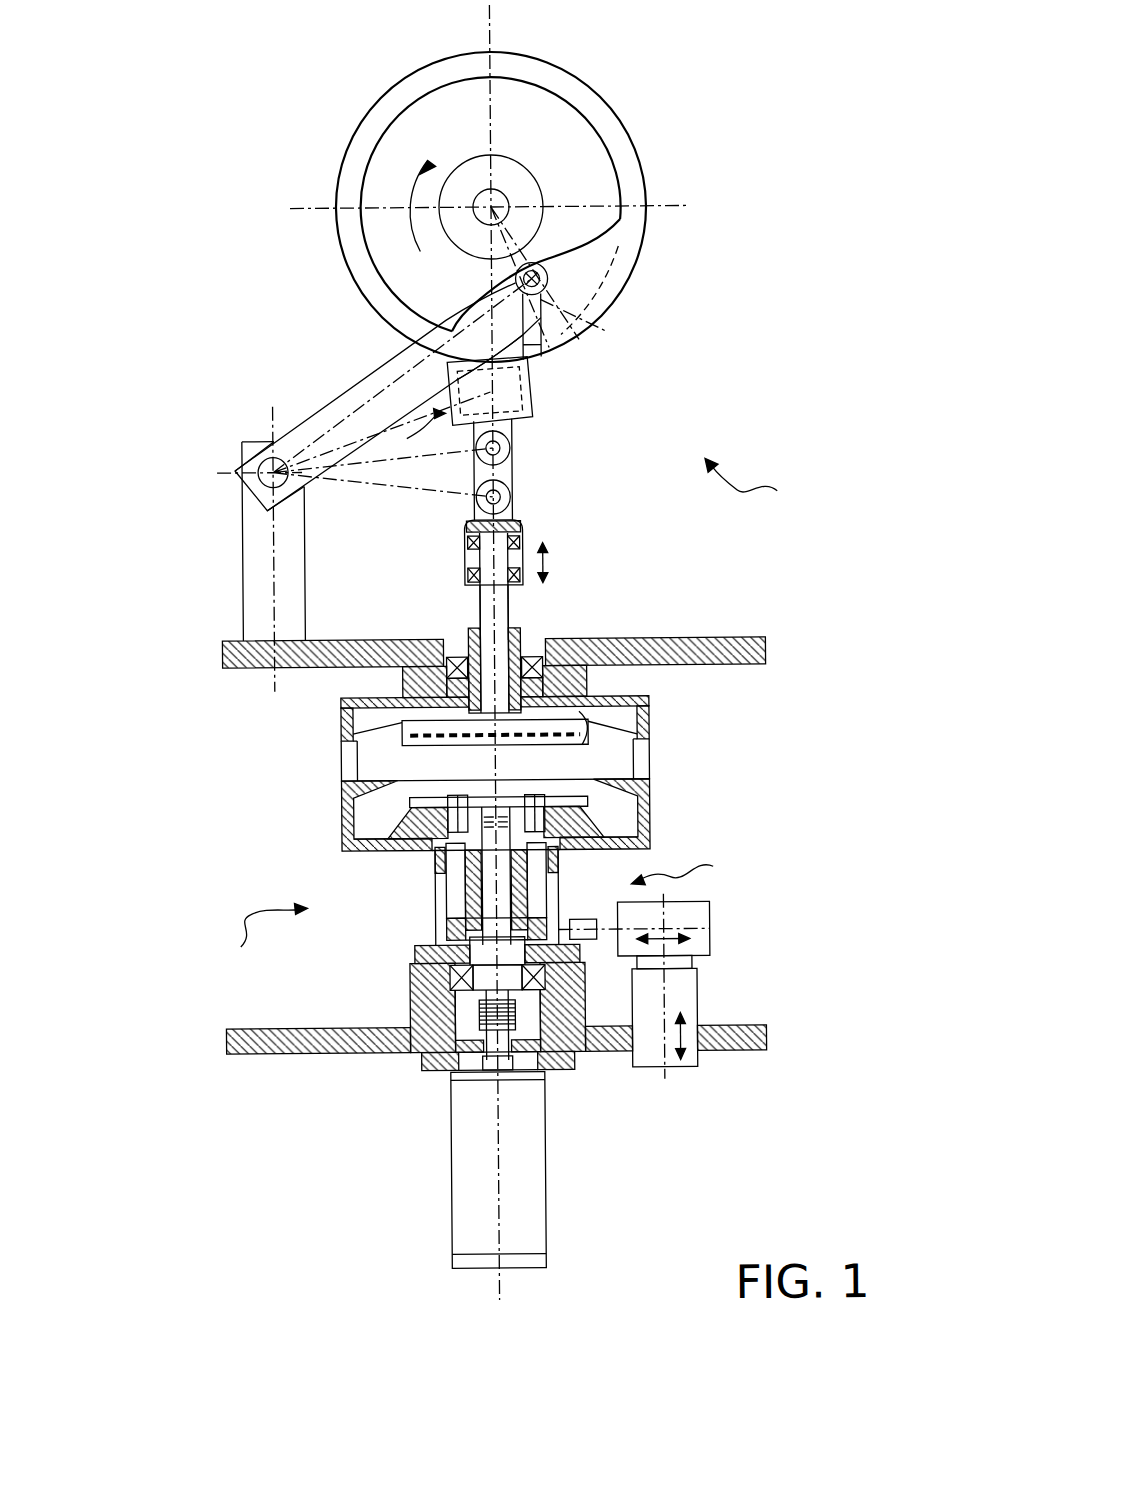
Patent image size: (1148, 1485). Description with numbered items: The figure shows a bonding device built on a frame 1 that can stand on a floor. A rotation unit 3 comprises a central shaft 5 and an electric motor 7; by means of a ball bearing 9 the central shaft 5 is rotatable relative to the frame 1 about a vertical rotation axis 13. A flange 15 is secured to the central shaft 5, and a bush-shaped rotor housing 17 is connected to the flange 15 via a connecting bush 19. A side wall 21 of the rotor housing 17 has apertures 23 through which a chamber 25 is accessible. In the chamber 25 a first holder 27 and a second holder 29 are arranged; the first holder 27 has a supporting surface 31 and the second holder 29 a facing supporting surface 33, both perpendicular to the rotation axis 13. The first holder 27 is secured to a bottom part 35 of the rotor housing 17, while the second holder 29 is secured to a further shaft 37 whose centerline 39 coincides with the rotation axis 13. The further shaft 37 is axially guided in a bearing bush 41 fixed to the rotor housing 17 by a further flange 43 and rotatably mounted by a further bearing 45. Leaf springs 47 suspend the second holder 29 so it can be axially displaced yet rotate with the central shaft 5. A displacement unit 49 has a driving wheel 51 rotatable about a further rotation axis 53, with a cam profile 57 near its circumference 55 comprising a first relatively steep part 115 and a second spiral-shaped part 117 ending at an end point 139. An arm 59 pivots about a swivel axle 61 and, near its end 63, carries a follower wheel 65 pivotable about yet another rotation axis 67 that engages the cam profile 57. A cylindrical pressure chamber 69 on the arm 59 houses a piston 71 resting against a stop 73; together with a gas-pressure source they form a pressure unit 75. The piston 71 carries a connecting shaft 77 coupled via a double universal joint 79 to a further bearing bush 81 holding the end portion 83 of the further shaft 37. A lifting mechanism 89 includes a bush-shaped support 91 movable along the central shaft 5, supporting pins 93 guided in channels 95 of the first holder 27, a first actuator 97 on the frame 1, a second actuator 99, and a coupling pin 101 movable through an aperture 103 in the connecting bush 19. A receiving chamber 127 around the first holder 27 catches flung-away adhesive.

The frame 1 is at (245, 576).
The rotation unit 3 is at (206, 958).
The central shaft 5 is at (485, 895).
The electric motor 7 is at (465, 1197).
The ball bearing 9 is at (420, 985).
The rotation axis 13 is at (490, 613).
The flange 15 is at (412, 955).
The rotor housing 17 is at (340, 797).
The connecting bush 19 is at (555, 855).
The side wall 21 is at (645, 712).
The apertures 23 is at (640, 770).
The chamber 25 is at (365, 720).
The first holder 27 is at (580, 800).
The second holder 29 is at (420, 742).
The supporting surface 31 is at (544, 795).
The supporting surface 33 is at (580, 710).
The bottom part 35 is at (420, 845).
The further shaft 37 is at (465, 636).
The centerline 39 is at (513, 612).
The bearing bush 41 is at (519, 630).
The further flange 43 is at (415, 686).
The further bearing 45 is at (540, 662).
The leaf springs 47 is at (360, 733).
The displacement unit 49 is at (774, 514).
The driving wheel 51 is at (502, 207).
The further rotation axis 53 is at (488, 192).
The circumference 55 is at (602, 90).
The cam profile 57 is at (502, 204).
The arm 59 is at (345, 395).
The swivel axle 61 is at (258, 470).
The end 63 is at (552, 350).
The follower wheel 65 is at (556, 284).
The rotation axis 67 is at (515, 270).
The pressure chamber 69 is at (533, 377).
The piston 71 is at (530, 408).
The stop 73 is at (530, 418).
The pressure unit 75 is at (375, 450).
The connecting shaft 77 is at (510, 440).
The double universal joint 79 is at (510, 478).
The further bearing bush 81 is at (525, 540).
The end portion 83 is at (480, 556).
The lifting mechanism 89 is at (706, 884).
The bush-shaped support 91 is at (450, 925).
The supporting pins 93 is at (468, 812).
The channels 95 is at (434, 795).
The first actuator 97 is at (646, 1068).
The second actuator 99 is at (704, 915).
The coupling pin 101 is at (590, 932).
The aperture 103 is at (555, 890).
The first relatively steep part 115 is at (630, 240).
The second spiral-shaped part 117 is at (372, 152).
The receiving chamber 127 is at (625, 828).
The end point 139 is at (400, 320).